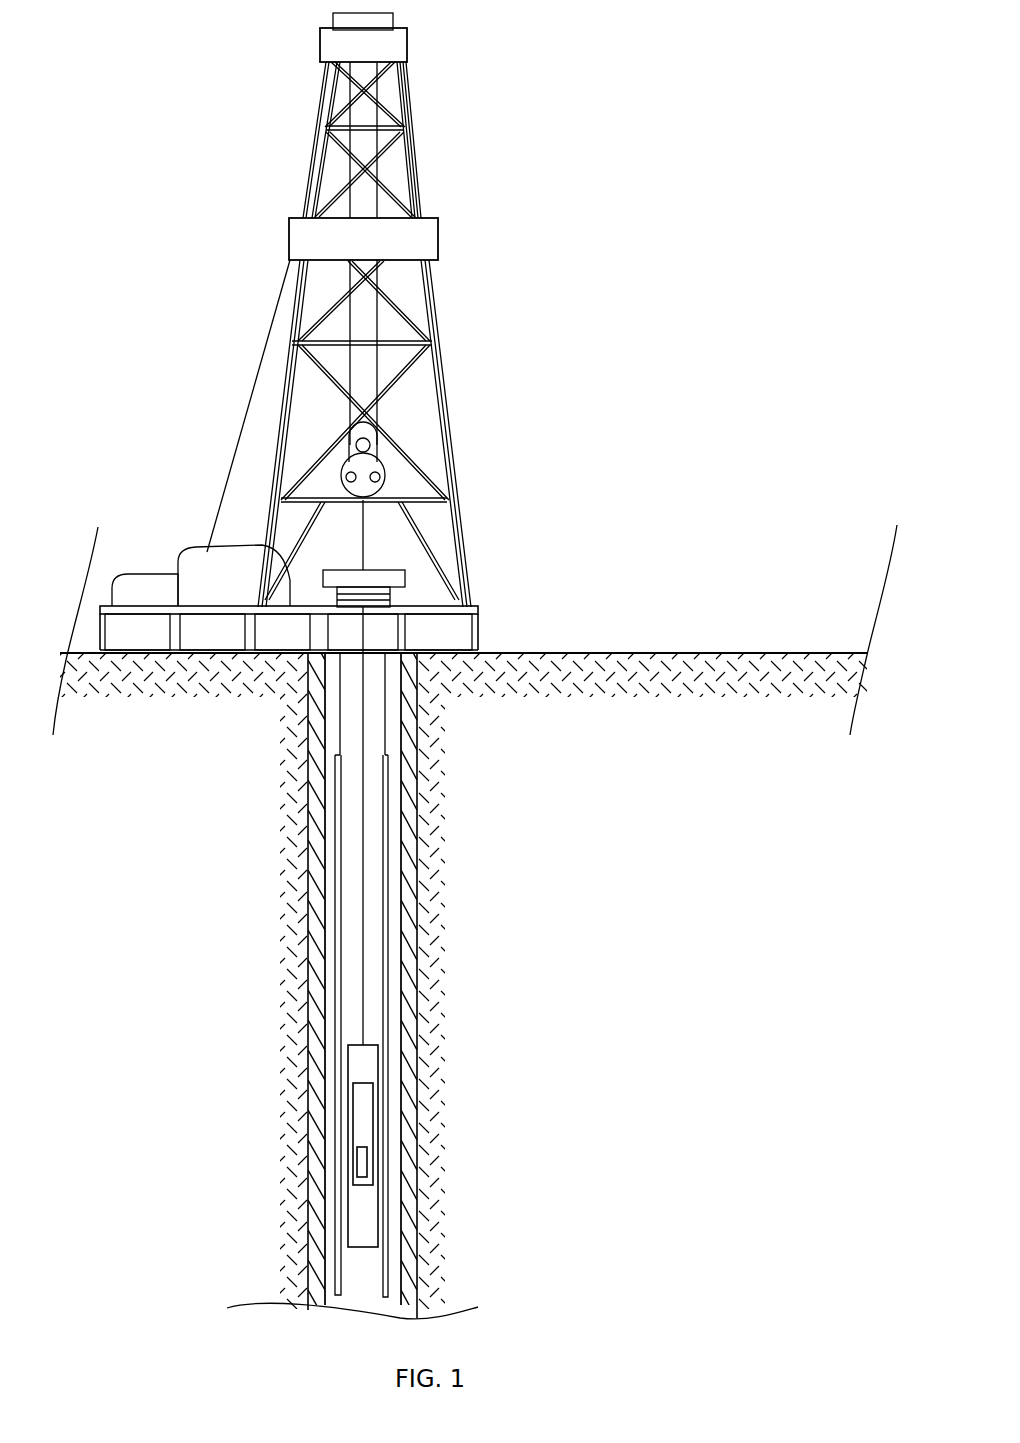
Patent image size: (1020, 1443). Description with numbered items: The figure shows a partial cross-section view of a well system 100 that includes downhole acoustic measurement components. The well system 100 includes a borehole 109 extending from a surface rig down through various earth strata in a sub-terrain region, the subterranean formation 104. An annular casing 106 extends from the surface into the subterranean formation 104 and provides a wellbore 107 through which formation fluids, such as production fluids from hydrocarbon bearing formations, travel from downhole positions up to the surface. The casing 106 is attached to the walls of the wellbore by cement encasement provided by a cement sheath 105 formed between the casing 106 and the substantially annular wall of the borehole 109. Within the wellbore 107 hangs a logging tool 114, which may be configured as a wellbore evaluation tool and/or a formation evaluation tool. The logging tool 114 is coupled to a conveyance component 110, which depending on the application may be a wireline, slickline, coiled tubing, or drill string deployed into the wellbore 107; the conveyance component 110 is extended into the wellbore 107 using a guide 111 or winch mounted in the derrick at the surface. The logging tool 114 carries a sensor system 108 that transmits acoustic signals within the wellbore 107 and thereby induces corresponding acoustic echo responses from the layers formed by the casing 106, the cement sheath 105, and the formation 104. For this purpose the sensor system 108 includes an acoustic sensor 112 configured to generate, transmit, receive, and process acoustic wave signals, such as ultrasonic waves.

The well system 100 is at (627, 206).
The subterranean formation 104 is at (671, 1029).
The cement sheath 105 is at (410, 1130).
The casing 106 is at (310, 905).
The wellbore 107 is at (387, 928).
The sensor system 108 is at (363, 1108).
The borehole 109 is at (420, 826).
The conveyance component 110 is at (363, 1020).
The guide 111 is at (387, 466).
The acoustic sensor 112 is at (363, 1163).
The logging tool 114 is at (378, 1082).